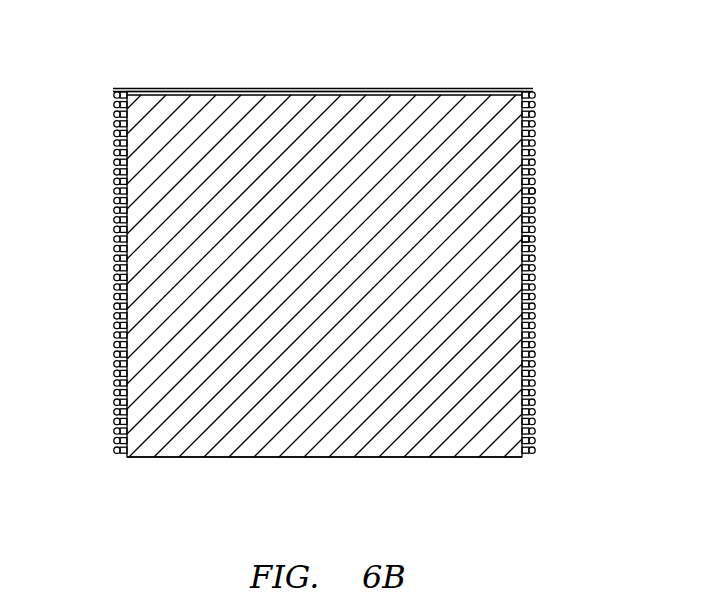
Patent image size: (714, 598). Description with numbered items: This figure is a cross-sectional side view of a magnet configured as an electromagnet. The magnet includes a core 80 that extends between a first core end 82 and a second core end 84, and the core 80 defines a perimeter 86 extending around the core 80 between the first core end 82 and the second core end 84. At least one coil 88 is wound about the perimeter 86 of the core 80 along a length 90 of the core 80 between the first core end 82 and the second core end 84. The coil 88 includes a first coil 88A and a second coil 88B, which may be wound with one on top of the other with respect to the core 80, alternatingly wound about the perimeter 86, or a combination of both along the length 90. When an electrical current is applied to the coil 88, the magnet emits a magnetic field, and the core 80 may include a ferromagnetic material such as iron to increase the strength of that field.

The core 80 is at (205, 122).
The first core end 82 is at (377, 93).
The second core end 84 is at (466, 457).
The perimeter 86 is at (532, 345).
The coil 88 is at (383, 242).
The first coil 88A is at (535, 188).
The second coil 88B is at (532, 236).
The length 90 is at (45, 90).